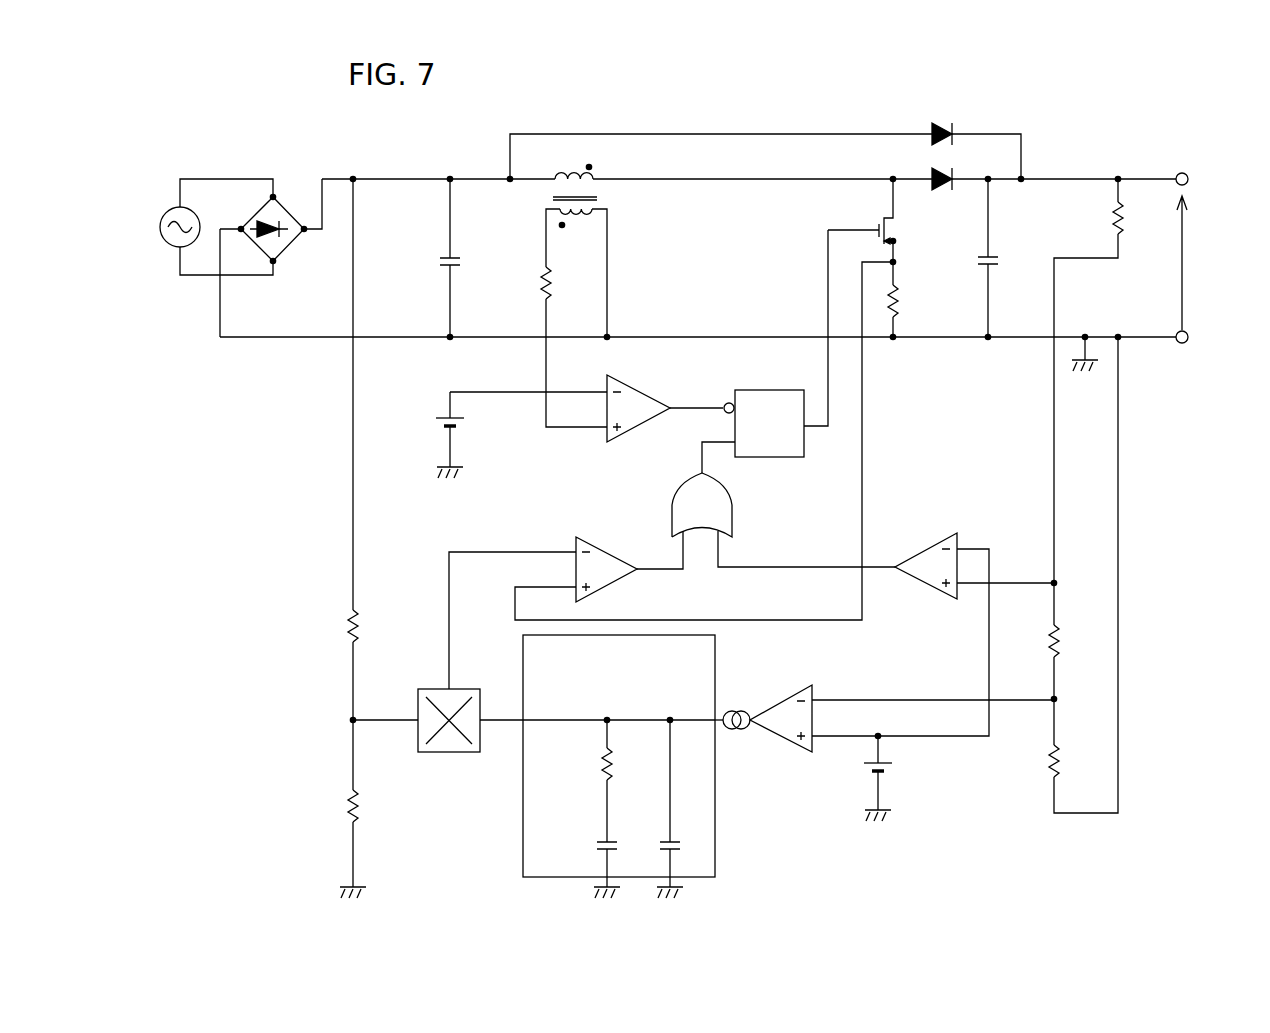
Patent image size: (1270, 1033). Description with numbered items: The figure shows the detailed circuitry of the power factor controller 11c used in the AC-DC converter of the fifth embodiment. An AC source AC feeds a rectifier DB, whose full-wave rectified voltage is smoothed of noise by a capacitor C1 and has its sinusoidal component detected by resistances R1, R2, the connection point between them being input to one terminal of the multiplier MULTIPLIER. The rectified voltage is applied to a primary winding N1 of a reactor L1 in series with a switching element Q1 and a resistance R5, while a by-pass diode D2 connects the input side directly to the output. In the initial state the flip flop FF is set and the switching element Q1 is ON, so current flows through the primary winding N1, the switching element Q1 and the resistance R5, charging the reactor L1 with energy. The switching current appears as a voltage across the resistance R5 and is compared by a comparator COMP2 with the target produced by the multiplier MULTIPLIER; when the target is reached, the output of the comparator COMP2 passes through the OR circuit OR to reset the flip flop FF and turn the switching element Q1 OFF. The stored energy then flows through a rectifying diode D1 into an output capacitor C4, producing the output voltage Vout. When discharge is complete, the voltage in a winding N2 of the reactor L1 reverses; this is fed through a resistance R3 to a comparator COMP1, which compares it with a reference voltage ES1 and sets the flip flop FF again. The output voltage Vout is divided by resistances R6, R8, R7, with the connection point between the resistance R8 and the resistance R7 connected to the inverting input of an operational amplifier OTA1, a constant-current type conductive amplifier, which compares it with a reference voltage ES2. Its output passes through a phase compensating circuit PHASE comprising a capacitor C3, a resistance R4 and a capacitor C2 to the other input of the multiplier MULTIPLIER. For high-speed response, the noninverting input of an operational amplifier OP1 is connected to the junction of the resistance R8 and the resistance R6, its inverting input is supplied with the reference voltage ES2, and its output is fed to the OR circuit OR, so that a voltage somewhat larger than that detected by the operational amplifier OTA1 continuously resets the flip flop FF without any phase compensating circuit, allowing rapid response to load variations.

The power factor controller 11c is at (643, 129).
The AC power source AC is at (200, 227).
The rectifier DB is at (293, 210).
The capacitor C1 is at (436, 258).
The reactor L1 is at (598, 239).
The primary winding N1 is at (575, 158).
The winding N2 is at (578, 274).
The resistance R3 is at (557, 347).
The rectifying diode D1 is at (945, 194).
The by-pass diode D2 is at (945, 119).
The switching element Q1 is at (705, 398).
The resistance R5 is at (910, 312).
The output capacitor C4 is at (974, 258).
The resistance R6 is at (1105, 379).
The output voltage Vout is at (1158, 272).
The reference voltage ES1 is at (507, 420).
The comparator COMP1 is at (660, 396).
The flip flop FF is at (765, 351).
The OR circuit OR is at (766, 521).
The comparator COMP2 is at (543, 600).
The operational amplifier OP1 is at (934, 625).
The resistance R8 is at (1074, 642).
The resistance R7 is at (1085, 573).
The operational amplifier OTA1 is at (884, 708).
The reference voltage ES2 is at (903, 778).
The resistance R1 is at (336, 666).
The resistance R2 is at (340, 809).
The multiplier MULTIPLIER is at (438, 739).
The phase compensating circuit PHASE is at (619, 766).
The resistance R4 is at (590, 779).
The capacitor C2 is at (594, 868).
The capacitor C3 is at (657, 807).